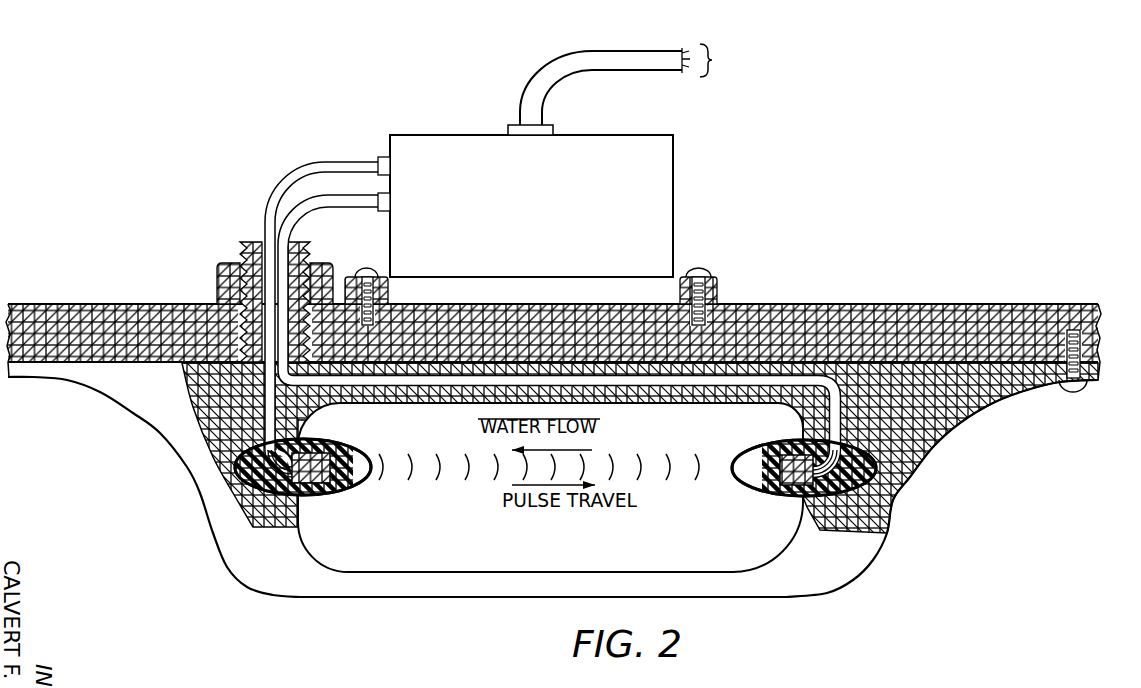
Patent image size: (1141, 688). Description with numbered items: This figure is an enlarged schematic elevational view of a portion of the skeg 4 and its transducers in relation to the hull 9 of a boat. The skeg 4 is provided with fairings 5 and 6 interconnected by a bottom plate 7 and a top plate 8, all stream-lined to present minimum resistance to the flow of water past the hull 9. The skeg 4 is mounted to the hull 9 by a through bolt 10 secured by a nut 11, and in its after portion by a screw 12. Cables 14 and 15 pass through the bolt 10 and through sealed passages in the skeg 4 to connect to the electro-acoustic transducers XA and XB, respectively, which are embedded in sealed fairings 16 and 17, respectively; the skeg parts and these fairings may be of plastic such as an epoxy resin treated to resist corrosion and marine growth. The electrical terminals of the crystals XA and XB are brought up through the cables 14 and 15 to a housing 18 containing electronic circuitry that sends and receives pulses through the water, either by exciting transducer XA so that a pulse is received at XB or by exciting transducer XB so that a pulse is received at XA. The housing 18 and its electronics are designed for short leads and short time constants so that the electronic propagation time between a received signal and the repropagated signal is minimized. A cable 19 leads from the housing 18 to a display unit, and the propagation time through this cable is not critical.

The skeg 4 is at (266, 597).
The fairing 5 is at (205, 493).
The fairing 6 is at (878, 534).
The bottom plate 7 is at (600, 573).
The top plate 8 is at (438, 406).
The hull 9 is at (172, 304).
The through bolt 10 is at (246, 242).
The nut 11 is at (218, 270).
The screw 12 is at (1072, 393).
The cable 14 is at (348, 162).
The cable 15 is at (338, 207).
The sealed fairing 16 is at (316, 463).
The sealed fairing 17 is at (793, 486).
The housing 18 is at (681, 136).
The cable 19 is at (628, 52).
The electro-acoustic transducer XA is at (332, 490).
The electro-acoustic transducer XB is at (790, 490).